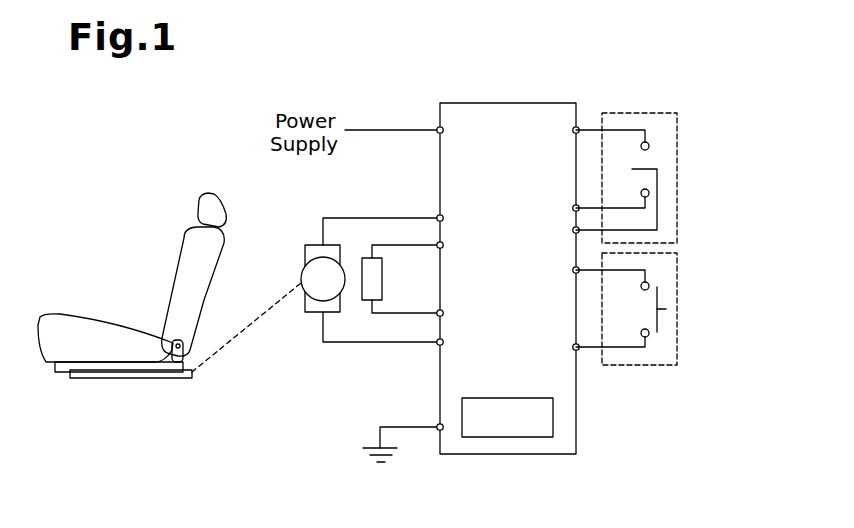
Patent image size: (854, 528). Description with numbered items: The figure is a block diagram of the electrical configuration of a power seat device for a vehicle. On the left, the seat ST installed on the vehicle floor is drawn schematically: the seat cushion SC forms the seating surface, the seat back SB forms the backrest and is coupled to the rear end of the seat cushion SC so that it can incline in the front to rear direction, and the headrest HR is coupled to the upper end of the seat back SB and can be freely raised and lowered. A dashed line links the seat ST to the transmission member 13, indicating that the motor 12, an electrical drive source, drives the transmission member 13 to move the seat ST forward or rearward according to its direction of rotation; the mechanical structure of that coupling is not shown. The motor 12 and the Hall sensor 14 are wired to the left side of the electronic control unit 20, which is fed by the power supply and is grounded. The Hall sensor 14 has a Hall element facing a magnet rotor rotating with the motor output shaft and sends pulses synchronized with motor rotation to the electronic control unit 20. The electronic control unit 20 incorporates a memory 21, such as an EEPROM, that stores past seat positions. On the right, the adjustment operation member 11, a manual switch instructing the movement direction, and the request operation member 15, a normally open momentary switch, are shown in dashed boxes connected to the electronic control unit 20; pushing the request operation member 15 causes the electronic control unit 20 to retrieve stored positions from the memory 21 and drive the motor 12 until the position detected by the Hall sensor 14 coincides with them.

The seat ST is at (152, 271).
The headrest HR is at (197, 200).
The seat back SB is at (214, 298).
The seat cushion SC is at (85, 315).
The transmission member 13 is at (259, 318).
The motor 12 is at (303, 270).
The Hall sensor 14 is at (360, 287).
The electronic control unit 20 is at (505, 103).
The memory 21 is at (507, 398).
The adjustment operation member 11 is at (677, 175).
The request operation member 15 is at (677, 307).